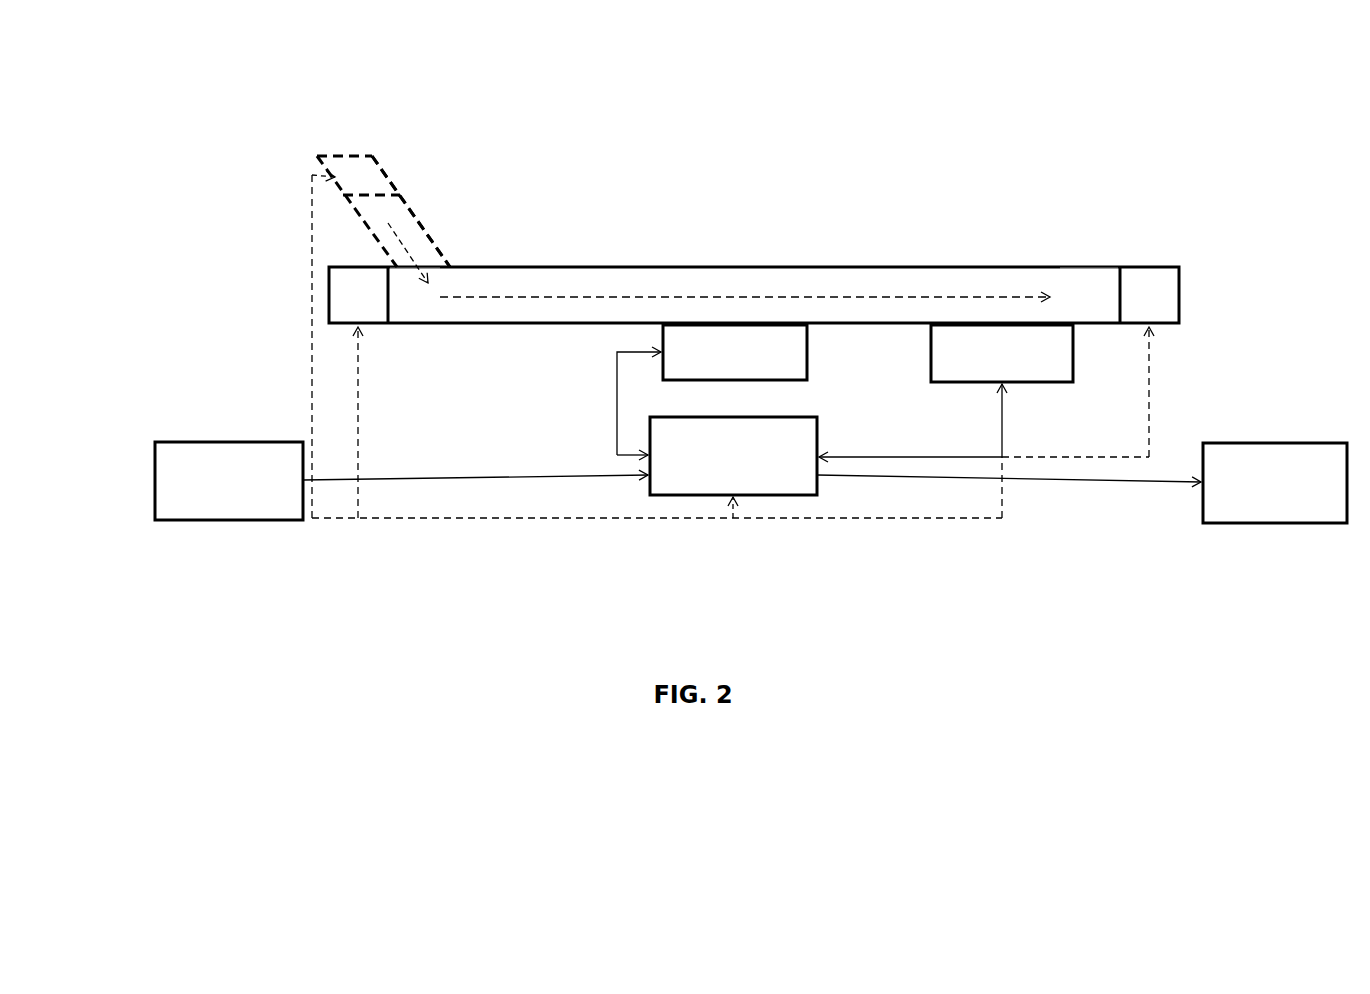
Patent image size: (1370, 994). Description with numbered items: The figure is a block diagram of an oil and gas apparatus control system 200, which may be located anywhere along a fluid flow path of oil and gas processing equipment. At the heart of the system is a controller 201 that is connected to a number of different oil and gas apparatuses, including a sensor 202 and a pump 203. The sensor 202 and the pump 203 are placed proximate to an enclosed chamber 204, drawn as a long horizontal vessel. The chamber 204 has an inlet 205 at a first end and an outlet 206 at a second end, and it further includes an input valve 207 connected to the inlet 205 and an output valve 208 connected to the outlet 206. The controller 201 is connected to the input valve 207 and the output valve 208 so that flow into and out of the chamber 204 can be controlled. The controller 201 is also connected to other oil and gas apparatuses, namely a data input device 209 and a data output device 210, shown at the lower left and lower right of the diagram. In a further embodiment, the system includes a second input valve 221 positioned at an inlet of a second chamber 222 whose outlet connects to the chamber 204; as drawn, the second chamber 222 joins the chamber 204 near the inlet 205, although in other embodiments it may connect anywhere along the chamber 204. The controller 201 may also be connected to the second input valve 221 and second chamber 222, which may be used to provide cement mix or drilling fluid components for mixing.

The oil and gas apparatus control system 200 is at (955, 108).
The controller 201 is at (810, 428).
The sensor 202 is at (787, 363).
The pump 203 is at (1055, 345).
The chamber 204 is at (785, 297).
The inlet 205 is at (410, 295).
The outlet 206 is at (1093, 297).
The input valve 207 is at (353, 293).
The output valve 208 is at (1158, 297).
The data input device 209 is at (229, 517).
The data output device 210 is at (1275, 513).
The second input valve 221 is at (353, 182).
The second chamber 222 is at (417, 212).